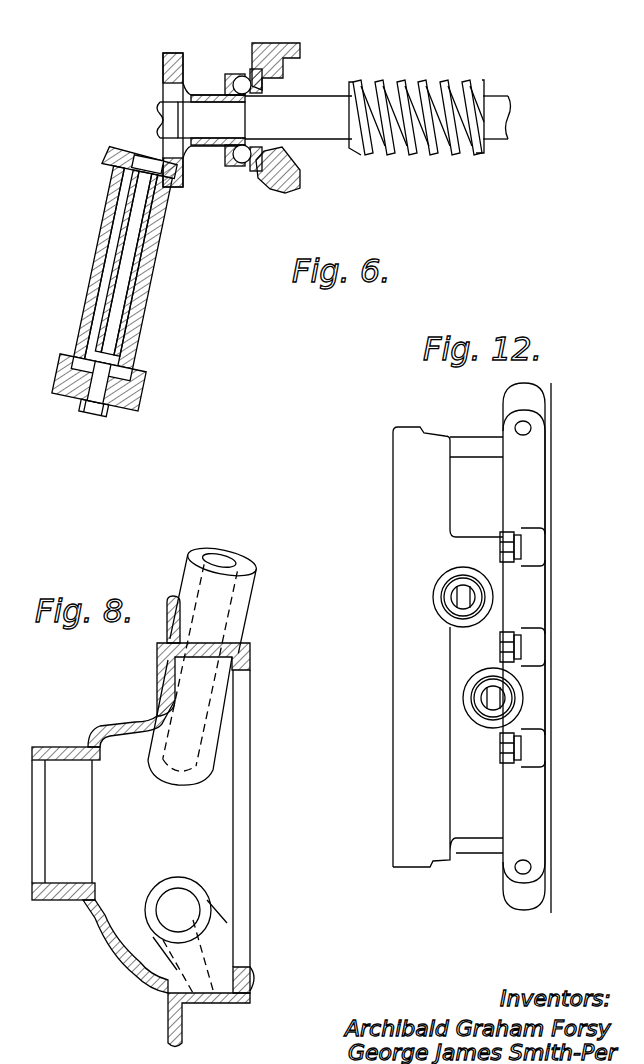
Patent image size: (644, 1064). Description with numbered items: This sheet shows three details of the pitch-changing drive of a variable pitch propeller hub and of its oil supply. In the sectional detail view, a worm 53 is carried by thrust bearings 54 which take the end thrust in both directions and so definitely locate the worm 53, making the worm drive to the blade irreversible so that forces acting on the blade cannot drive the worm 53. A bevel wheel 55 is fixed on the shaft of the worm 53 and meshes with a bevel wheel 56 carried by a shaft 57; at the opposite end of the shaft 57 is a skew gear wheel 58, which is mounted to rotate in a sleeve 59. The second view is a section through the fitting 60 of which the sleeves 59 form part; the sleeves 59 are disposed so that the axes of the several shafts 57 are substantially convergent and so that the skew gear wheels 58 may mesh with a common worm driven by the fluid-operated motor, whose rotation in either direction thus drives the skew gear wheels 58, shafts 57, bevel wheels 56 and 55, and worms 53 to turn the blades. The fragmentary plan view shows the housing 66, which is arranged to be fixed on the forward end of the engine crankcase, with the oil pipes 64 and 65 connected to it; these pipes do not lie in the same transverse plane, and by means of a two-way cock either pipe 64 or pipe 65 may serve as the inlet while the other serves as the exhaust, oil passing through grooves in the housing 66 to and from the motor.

In FIG. 6, the worm 53 is at (442, 84).
In FIG. 6, the thrust bearings 54 is at (239, 77).
In FIG. 6, the bevel wheel 55 is at (168, 58).
In FIG. 6, the bevel wheel 56 is at (115, 162).
In FIG. 6, the shaft 57 is at (108, 276).
In FIG. 6, the skew gear wheel 58 is at (62, 383).
In FIG. 6, the sleeve 59 is at (148, 269).
In FIG. 8, the fitting 60 is at (94, 947).
In FIG. 12, the pipe 64 is at (490, 700).
In FIG. 12, the pipe 65 is at (462, 597).
In FIG. 12, the housing 66 is at (462, 500).